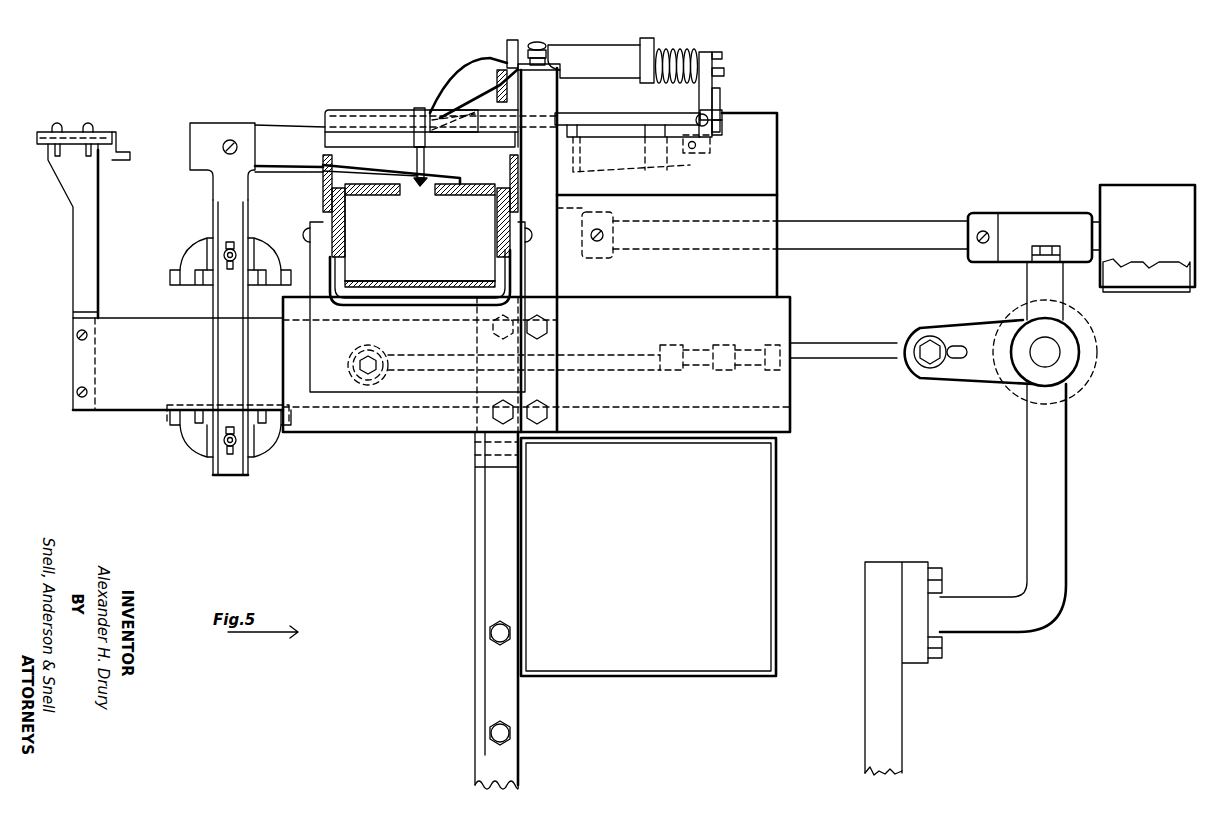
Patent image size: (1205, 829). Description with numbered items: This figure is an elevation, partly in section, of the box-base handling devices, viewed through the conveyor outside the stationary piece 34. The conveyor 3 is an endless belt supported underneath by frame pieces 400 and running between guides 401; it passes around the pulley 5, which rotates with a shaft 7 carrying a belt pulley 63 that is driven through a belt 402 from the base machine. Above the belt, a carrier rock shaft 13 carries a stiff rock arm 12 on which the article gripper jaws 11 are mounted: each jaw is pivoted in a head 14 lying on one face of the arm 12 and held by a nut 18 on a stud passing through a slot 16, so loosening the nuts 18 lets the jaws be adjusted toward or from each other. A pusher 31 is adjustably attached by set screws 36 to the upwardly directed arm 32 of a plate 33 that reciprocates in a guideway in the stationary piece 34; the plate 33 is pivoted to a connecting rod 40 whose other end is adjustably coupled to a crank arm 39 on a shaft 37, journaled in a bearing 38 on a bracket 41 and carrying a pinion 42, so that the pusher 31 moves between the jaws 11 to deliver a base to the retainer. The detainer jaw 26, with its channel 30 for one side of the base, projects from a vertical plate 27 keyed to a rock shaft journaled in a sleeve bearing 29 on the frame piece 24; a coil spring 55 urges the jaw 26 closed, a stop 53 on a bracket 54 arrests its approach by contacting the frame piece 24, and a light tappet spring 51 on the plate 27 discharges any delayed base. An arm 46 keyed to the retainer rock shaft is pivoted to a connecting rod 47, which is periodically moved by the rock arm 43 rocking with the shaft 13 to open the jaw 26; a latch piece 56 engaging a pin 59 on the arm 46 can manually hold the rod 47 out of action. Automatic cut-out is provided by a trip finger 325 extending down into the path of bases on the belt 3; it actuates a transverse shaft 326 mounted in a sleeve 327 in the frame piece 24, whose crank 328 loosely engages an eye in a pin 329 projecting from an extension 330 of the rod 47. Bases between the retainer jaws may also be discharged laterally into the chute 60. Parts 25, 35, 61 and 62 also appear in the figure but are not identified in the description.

The conveyor belt 3 is at (421, 184).
The pulley 5 is at (420, 252).
The shaft 7 is at (838, 228).
The gripper jaws 11 is at (172, 276).
The stiff arm 12 is at (235, 209).
The carrier rock shaft 13 is at (190, 148).
The head 14 is at (211, 247).
The slot 16 is at (230, 242).
The nut 18 is at (250, 246).
The frame piece 24 is at (558, 286).
The column 25 is at (532, 120).
The detainer jaw 26 is at (388, 110).
The vertical plate 27 is at (512, 40).
The sleeve bearing 29 is at (598, 46).
The recess or channel 30 is at (330, 128).
The pusher 31 is at (118, 134).
The upwardly directed arm 32 is at (97, 260).
The plate 33 is at (178, 364).
The stationary piece 34 is at (425, 422).
The upright bar 35 is at (495, 538).
The set screws 36 is at (88, 131).
The shaft 37 is at (1055, 355).
The bearing 38 is at (1021, 378).
The crank arm 39 is at (976, 333).
The connecting rod 40 is at (830, 348).
The bracket 41 is at (1028, 524).
The pinion 42 is at (1090, 333).
The rock arm 43 is at (724, 130).
The arm 46 is at (699, 99).
The connecting rod 47 is at (721, 108).
The tappet member 51 is at (468, 90).
The stop 53 is at (538, 40).
The bracket 54 is at (562, 64).
The coil spring 55 is at (672, 50).
The latch piece 56 is at (722, 56).
The pin 59 is at (725, 72).
The chute 60 is at (778, 135).
The cylinder 61 is at (1048, 215).
The bracket 62 is at (572, 206).
The belt pulley 63 is at (1147, 236).
The trip finger 325 is at (417, 160).
The transverse shaft 326 is at (620, 113).
The sleeve 327 is at (448, 118).
The arm or crank 328 is at (702, 138).
The pin 329 is at (712, 123).
The extension 330 is at (725, 114).
The frame pieces 400 is at (373, 196).
The guides 401 is at (509, 167).
The belt 402 is at (1143, 263).